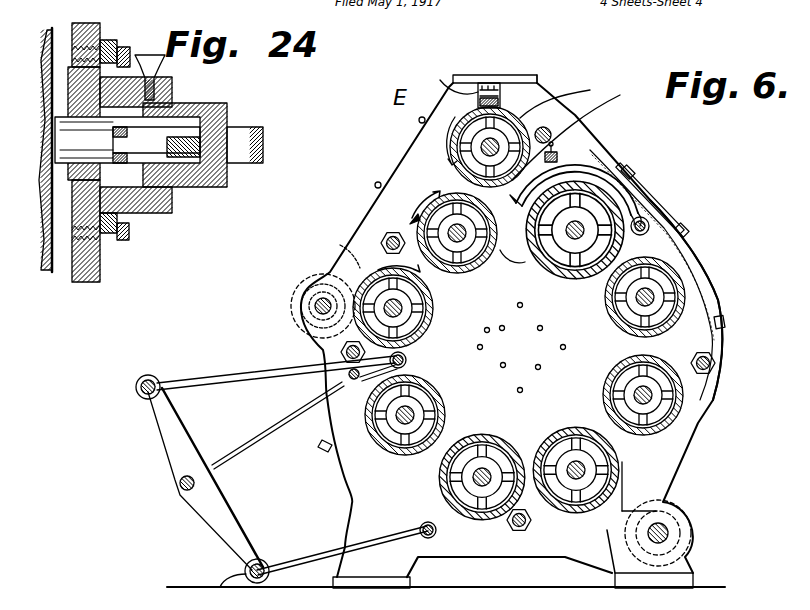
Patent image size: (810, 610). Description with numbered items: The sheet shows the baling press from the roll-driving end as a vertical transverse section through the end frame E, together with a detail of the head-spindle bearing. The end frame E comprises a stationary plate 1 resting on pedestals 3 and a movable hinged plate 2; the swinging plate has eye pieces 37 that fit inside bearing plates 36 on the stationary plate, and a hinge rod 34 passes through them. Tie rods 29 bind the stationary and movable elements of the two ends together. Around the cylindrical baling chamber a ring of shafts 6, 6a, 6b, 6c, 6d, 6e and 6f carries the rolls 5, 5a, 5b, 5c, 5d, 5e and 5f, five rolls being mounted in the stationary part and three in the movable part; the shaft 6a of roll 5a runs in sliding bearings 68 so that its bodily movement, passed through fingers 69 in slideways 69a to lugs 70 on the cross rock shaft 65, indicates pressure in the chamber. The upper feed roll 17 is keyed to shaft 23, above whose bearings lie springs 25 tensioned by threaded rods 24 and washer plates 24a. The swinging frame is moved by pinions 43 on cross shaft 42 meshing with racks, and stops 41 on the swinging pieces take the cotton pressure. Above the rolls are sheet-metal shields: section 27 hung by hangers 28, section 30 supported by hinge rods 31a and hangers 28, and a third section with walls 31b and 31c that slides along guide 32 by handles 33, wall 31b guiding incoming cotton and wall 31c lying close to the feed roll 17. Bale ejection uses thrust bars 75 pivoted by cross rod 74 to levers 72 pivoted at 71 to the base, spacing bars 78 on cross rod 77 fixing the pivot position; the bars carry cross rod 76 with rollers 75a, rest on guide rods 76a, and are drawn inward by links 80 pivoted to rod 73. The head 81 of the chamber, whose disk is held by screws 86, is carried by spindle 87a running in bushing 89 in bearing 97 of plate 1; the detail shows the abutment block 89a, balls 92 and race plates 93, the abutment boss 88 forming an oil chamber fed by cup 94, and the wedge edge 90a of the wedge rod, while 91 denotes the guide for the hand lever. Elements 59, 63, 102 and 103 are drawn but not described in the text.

In FIG. 24, the stationary plate 1 is at (85, 280).
In FIG. 6, the stationary plate 1 is at (344, 250).
In FIG. 6, the movable hinged plate 2 is at (707, 405).
In FIG. 6, the legs or pedestals 3 is at (382, 580).
In FIG. 6, the roll 5 is at (495, 268).
In FIG. 6, the roll 5a is at (432, 303).
In FIG. 6, the roll 5b is at (440, 425).
In FIG. 6, the roll 5c is at (495, 508).
In FIG. 6, the roll 5d is at (574, 470).
In FIG. 6, the roll 5e is at (615, 362).
In FIG. 6, the roll 5f is at (612, 318).
In FIG. 6, the shaft 6 is at (460, 236).
In FIG. 6, the shaft 6a is at (400, 312).
In FIG. 6, the shaft 6b is at (410, 410).
In FIG. 6, the shaft 6c is at (484, 470).
In FIG. 6, the shaft 6d is at (574, 465).
In FIG. 6, the shaft 6e is at (640, 392).
In FIG. 6, the shaft 6f is at (640, 298).
In FIG. 6, the upper feed roll 17 is at (544, 126).
In FIG. 6, the shaft 23 is at (488, 146).
In FIG. 6, the bolts or threaded rods 24 is at (515, 83).
In FIG. 6, the washer plates 24a is at (486, 88).
In FIG. 6, the springs 25 is at (455, 77).
In FIG. 6, the shield section 27 is at (722, 292).
In FIG. 6, the hangers 28 is at (684, 231).
In FIG. 6, the tie rods 29 is at (608, 160).
In FIG. 6, the second shield section 30 is at (512, 243).
In FIG. 6, the hinge rods 31a is at (638, 196).
In FIG. 6, the wall 31b is at (427, 195).
In FIG. 6, the wall 31c is at (582, 165).
In FIG. 6, the guide 32 is at (605, 190).
In FIG. 6, the handles 33 is at (563, 151).
In FIG. 6, the hinge rod 34 is at (566, 133).
In FIG. 6, the bearing plates 36 is at (540, 84).
In FIG. 6, the suspending plates or eye pieces 37 is at (561, 92).
In FIG. 6, the stops 41 is at (675, 512).
In FIG. 6, the cross shaft 42 is at (662, 530).
In FIG. 6, the pinions 43 is at (690, 536).
In FIG. 6, the main gear 59 is at (560, 248).
In FIG. 6, the lug 63 is at (325, 452).
In FIG. 6, the cross rock shaft 65 is at (314, 306).
In FIG. 6, the sliding bearings 68 is at (378, 290).
In FIG. 6, the finger 69 is at (574, 236).
In FIG. 6, the slideway 69a is at (320, 284).
In FIG. 6, the lugs 70 is at (312, 297).
In FIG. 6, the pivot 71 is at (296, 565).
In FIG. 6, the levers 72 is at (170, 450).
In FIG. 6, the rod 73 is at (184, 492).
In FIG. 6, the cross rod 74 is at (158, 378).
In FIG. 6, the thrust bars 75 is at (240, 383).
In FIG. 6, the rollers 75a is at (408, 360).
In FIG. 6, the cross rod 76 is at (378, 372).
In FIG. 6, the cross guide rods 76a is at (353, 380).
In FIG. 6, the cross rod 77 is at (428, 522).
In FIG. 6, the spacing bars 78 is at (345, 552).
In FIG. 6, the links 80 is at (268, 444).
In FIG. 24, the head 81 is at (44, 262).
In FIG. 6, the head 81 is at (522, 348).
In FIG. 6, the screws 86 is at (500, 330).
In FIG. 24, the spindle or shaft 87a is at (127, 140).
In FIG. 24, the abutment boss 88 is at (150, 205).
In FIG. 24, the bushing 89 is at (128, 235).
In FIG. 24, the abutment block 89a is at (210, 103).
In FIG. 24, the wedge shaped edge 90a is at (190, 160).
In FIG. 24, the guide 91 is at (256, 145).
In FIG. 24, the balls 92 is at (125, 163).
In FIG. 24, the thrust plates or race plates 93 is at (125, 128).
In FIG. 24, the oil cup 94 is at (148, 55).
In FIG. 24, the bearing 97 is at (140, 230).
In FIG. 6, the shoulder 102 is at (624, 484).
In FIG. 6, the ledge 103 is at (626, 512).
In FIG. 6, the end frame E is at (445, 88).